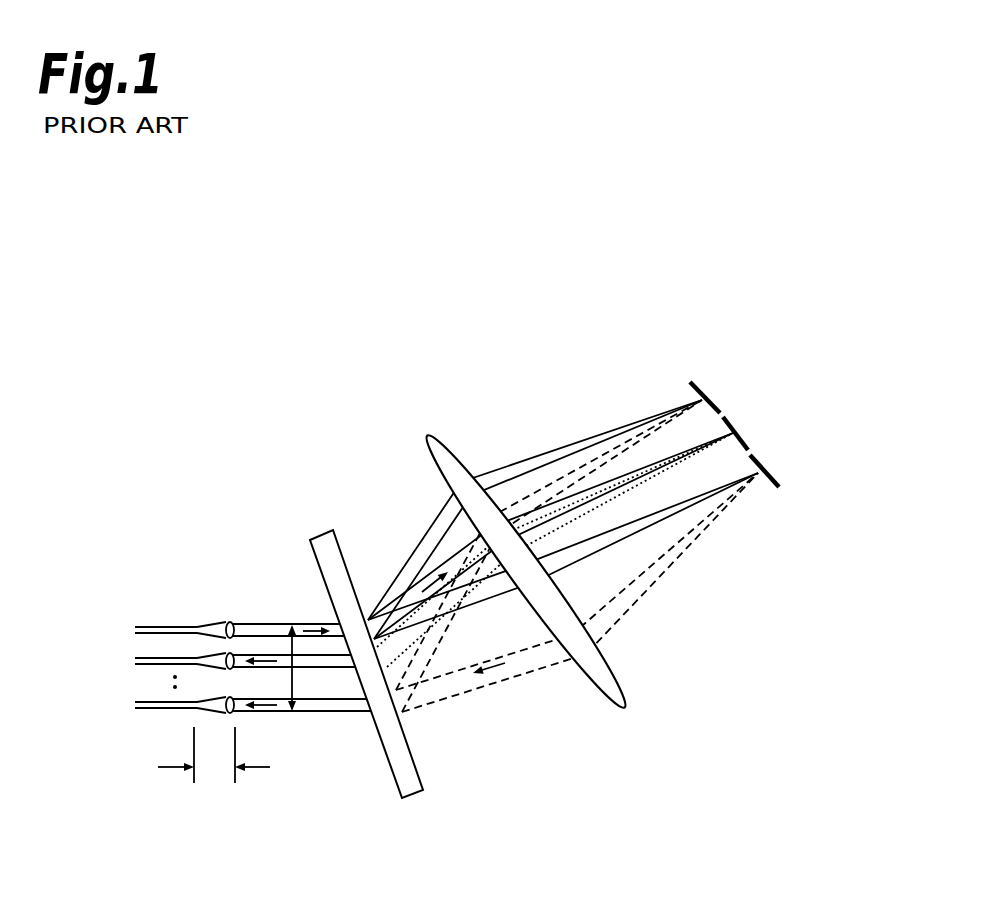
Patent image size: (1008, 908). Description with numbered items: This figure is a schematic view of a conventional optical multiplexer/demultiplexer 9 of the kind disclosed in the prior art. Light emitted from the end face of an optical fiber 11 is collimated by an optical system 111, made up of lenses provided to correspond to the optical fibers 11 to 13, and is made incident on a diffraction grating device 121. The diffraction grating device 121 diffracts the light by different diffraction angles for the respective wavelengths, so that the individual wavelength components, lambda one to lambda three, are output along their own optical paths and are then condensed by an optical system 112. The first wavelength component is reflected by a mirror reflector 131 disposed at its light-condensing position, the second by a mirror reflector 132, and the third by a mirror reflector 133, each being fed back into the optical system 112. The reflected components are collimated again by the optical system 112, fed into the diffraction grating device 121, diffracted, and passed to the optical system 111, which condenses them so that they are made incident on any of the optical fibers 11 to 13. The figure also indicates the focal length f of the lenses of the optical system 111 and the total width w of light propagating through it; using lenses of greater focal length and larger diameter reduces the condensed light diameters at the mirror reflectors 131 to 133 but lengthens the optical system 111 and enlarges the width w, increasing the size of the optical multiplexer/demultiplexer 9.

The optical multiplexer/demultiplexer 9 is at (318, 333).
The optical fiber 11 is at (152, 628).
The optical fiber 12 is at (152, 658).
The optical fiber 13 is at (152, 702).
The optical system 111 is at (232, 622).
The diffraction grating device 121 is at (325, 530).
The optical system 112 is at (427, 435).
The mirror reflector 131 is at (703, 393).
The mirror reflector 132 is at (735, 430).
The mirror reflector 133 is at (762, 468).